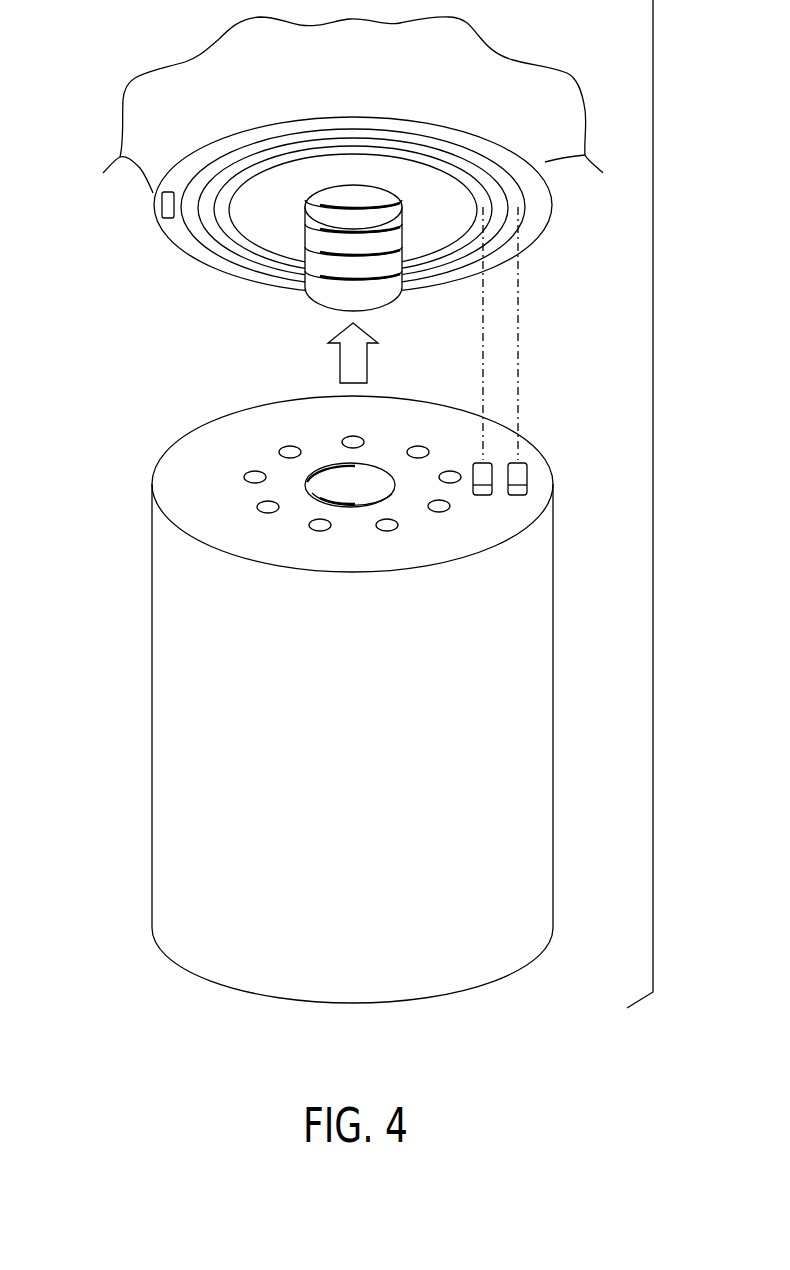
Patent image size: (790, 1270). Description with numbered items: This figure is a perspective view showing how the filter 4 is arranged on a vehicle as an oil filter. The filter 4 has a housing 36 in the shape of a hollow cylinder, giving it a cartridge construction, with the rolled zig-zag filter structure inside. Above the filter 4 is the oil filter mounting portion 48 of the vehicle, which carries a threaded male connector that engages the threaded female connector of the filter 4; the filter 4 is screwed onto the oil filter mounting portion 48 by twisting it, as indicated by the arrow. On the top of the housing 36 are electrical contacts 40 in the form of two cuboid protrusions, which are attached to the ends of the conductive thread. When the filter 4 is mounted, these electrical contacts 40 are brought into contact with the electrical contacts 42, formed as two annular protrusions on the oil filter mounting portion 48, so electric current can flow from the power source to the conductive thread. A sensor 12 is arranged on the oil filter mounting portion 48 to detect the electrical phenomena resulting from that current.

The filter 4 is at (568, 628).
The sensor 12 is at (163, 208).
The housing 36 is at (175, 705).
The electrical contacts 40 is at (483, 495).
The electrical contacts 42 is at (427, 160).
The oil filter mounting portion 48 is at (550, 161).